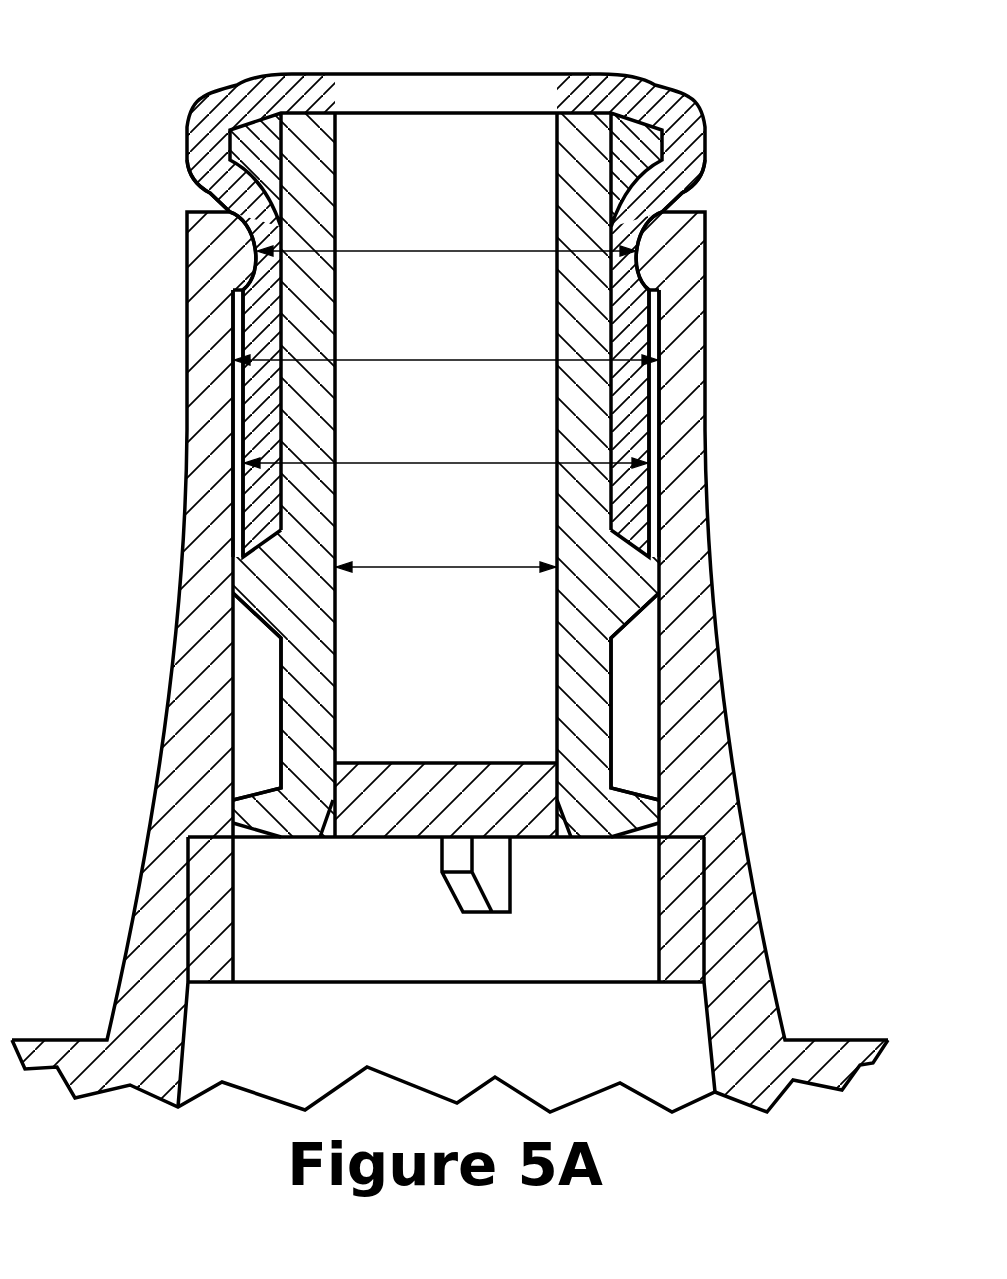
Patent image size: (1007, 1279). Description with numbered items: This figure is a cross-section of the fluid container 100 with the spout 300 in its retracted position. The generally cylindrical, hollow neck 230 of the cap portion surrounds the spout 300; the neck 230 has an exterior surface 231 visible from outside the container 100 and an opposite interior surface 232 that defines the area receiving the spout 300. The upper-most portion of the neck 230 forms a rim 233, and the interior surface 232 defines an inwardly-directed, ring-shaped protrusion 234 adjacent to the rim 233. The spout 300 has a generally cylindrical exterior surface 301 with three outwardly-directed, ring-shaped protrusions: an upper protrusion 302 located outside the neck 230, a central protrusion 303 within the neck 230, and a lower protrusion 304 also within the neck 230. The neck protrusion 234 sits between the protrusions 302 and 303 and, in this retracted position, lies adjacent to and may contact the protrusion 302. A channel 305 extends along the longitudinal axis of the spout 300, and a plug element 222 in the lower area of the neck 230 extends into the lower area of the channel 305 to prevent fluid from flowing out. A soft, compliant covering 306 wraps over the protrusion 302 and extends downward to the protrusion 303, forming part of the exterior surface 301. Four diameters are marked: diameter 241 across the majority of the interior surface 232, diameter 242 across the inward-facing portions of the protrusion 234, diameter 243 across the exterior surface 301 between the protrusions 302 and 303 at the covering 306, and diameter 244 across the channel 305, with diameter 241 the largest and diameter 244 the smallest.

The fluid container 100 is at (135, 100).
The plug element 222 is at (380, 840).
The neck 230 is at (172, 624).
The exterior surface 231 is at (185, 399).
The interior surface 232 is at (237, 420).
The rim 233 is at (207, 210).
The protrusion 234 is at (247, 240).
The diameter 241 is at (447, 358).
The diameter 242 is at (447, 250).
The diameter 243 is at (471, 462).
The diameter 244 is at (447, 566).
The spout 300 is at (705, 95).
The exterior surface 301 is at (618, 727).
The protrusion 302 is at (706, 130).
The protrusion 303 is at (655, 572).
The protrusion 304 is at (228, 812).
The channel 305 is at (337, 153).
The covering 306 is at (256, 72).